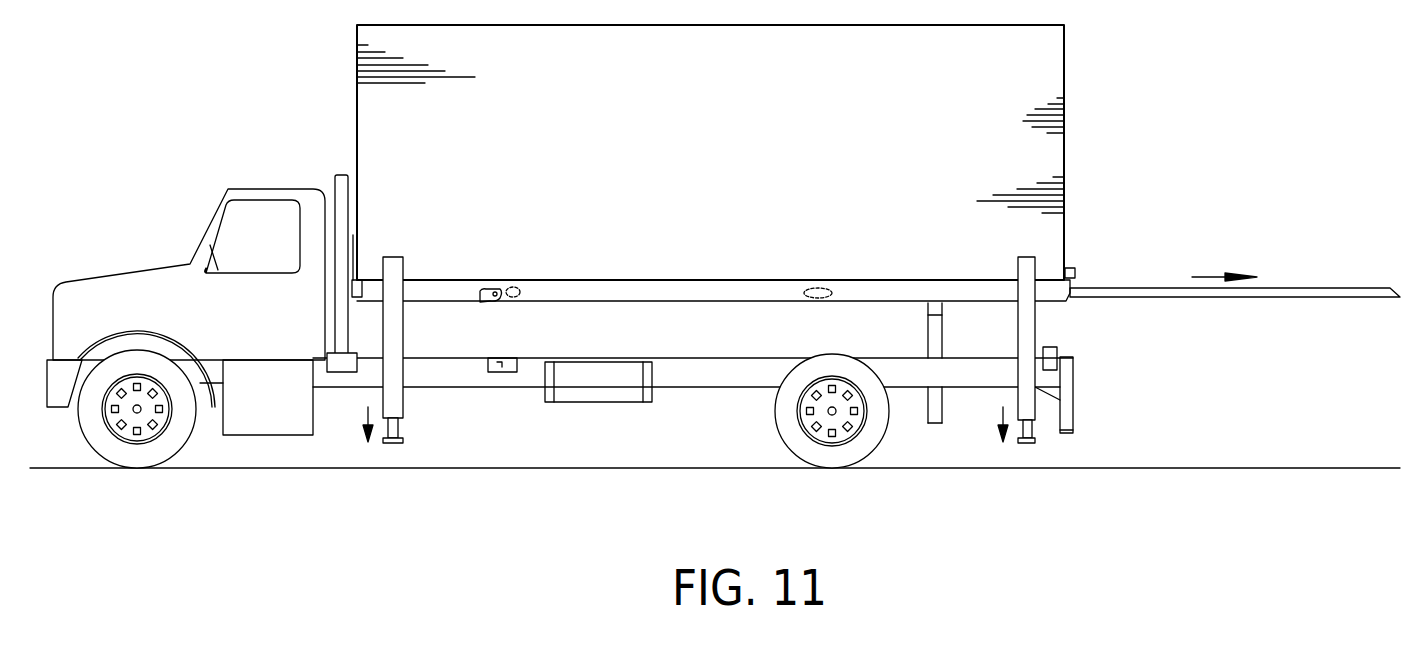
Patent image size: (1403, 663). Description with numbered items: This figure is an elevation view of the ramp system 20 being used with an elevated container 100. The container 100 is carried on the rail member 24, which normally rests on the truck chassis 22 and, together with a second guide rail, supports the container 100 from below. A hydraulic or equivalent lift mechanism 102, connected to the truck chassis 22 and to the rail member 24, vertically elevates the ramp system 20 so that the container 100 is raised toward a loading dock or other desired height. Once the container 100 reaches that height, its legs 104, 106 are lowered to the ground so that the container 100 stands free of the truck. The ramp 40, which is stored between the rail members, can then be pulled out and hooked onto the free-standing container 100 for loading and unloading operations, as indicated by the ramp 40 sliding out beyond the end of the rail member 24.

The ramp system 20 is at (956, 265).
The truck chassis 22 is at (718, 372).
The rail member 24 is at (730, 292).
The ramp 40 is at (1345, 288).
The container 100 is at (1018, 80).
The lift mechanism 102 is at (338, 185).
The leg 104 is at (392, 328).
The leg 106 is at (1027, 325).